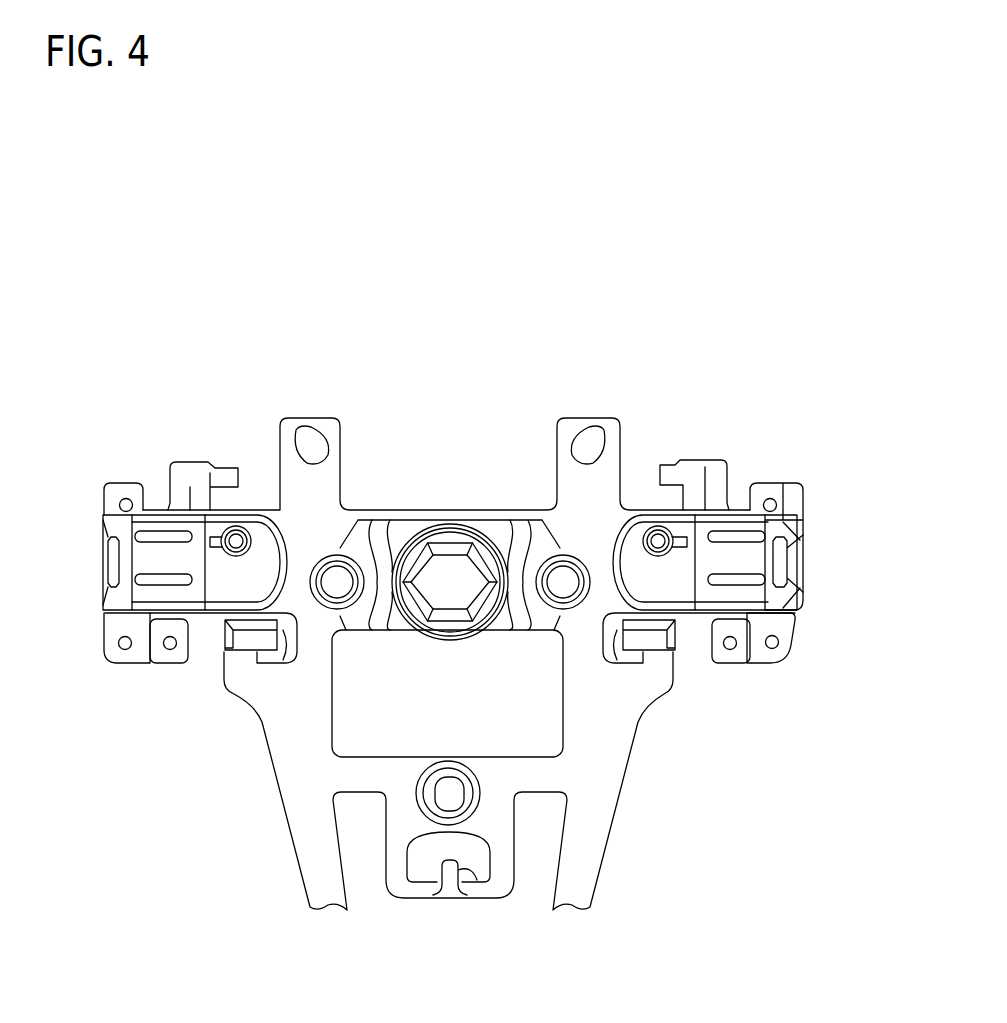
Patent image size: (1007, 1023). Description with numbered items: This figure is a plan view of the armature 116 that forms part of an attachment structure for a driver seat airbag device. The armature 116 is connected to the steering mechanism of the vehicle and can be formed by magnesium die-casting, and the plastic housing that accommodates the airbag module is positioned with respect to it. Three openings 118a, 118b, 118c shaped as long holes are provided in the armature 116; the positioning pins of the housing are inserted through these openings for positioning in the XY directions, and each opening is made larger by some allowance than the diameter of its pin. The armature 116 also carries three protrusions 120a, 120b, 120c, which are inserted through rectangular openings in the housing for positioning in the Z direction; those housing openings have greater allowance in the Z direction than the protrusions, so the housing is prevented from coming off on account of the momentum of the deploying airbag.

The armature 116 is at (655, 314).
The opening 118a is at (590, 432).
The opening 118b is at (310, 432).
The opening 118c is at (437, 797).
The protrusion 120a is at (653, 465).
The protrusion 120b is at (238, 468).
The protrusion 120c is at (477, 880).